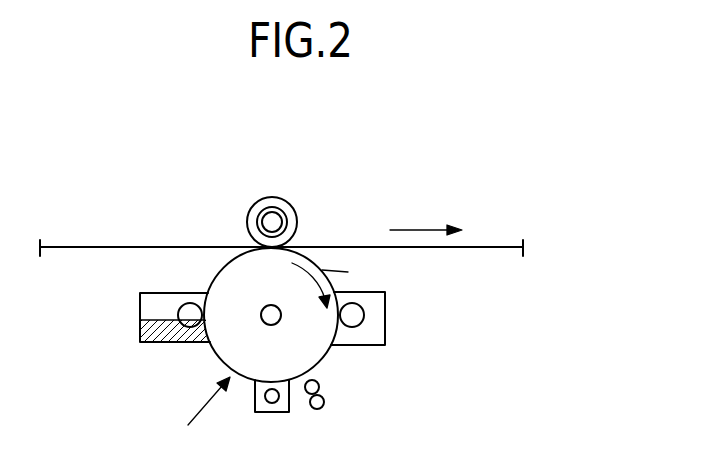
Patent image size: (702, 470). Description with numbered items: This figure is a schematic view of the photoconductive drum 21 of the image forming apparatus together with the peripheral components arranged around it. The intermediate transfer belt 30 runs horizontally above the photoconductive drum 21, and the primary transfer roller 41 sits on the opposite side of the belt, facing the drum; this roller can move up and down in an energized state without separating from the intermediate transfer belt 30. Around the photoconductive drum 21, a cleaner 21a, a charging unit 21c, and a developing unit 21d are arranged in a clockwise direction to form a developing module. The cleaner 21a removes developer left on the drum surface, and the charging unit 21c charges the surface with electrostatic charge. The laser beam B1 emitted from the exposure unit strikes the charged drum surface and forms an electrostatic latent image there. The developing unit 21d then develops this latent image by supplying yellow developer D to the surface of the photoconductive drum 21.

The intermediate transfer belt 30 is at (143, 245).
The primary transfer roller 41 is at (272, 196).
The photoconductive drum 21 is at (324, 353).
The cleaner 21a is at (386, 301).
The charging unit 21c is at (272, 414).
The developing unit 21d is at (228, 359).
The yellow developer D is at (138, 330).
The laser beam B1 is at (205, 404).